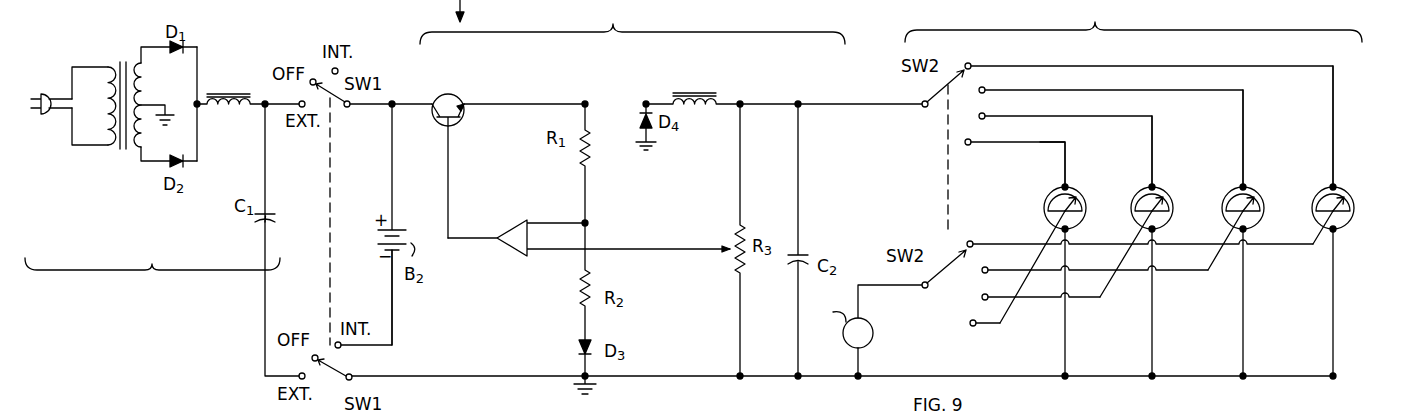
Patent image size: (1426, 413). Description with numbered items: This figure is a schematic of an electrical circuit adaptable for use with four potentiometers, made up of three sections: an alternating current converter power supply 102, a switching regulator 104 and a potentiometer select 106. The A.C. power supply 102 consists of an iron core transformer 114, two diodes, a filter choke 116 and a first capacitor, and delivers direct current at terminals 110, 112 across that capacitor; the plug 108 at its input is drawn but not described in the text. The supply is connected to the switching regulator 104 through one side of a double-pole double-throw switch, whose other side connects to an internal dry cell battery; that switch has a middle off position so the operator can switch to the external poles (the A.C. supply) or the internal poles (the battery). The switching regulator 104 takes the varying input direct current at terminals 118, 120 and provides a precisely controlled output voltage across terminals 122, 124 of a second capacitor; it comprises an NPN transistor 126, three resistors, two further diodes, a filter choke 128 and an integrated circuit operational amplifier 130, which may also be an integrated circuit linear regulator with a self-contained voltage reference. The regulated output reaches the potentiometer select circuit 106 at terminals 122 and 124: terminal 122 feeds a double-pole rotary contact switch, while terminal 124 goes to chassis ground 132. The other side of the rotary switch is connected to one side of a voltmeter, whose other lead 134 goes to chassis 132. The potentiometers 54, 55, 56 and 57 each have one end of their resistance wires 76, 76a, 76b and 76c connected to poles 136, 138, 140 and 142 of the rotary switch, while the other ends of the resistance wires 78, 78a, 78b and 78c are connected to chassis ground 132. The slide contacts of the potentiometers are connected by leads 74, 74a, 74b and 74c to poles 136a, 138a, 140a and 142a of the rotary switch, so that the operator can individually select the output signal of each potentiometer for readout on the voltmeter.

The alternating current converter power supply 102 is at (152, 281).
The switching regulator 104 is at (632, 22).
The potentiometer select 106 is at (1133, 21).
The AC plug 108 is at (44, 94).
The terminal 110 is at (277, 112).
The terminal 112 is at (263, 352).
The iron core transformer 114 is at (121, 62).
The filter choke 116 is at (233, 94).
The terminal 118 is at (412, 103).
The terminal 120 is at (480, 375).
The terminal 122 is at (854, 92).
The terminal 124 is at (828, 380).
The NPN transistor 126 is at (458, 95).
The filter choke 128 is at (690, 93).
The integrated circuit operational amplifier 130 is at (508, 221).
The chassis ground 132 is at (595, 388).
The lead 134 is at (862, 370).
The pole 136 is at (972, 140).
The pole 138 is at (986, 114).
The pole 140 is at (986, 88).
The pole 142 is at (973, 64).
The pole 136a is at (971, 326).
The pole 138a is at (982, 299).
The pole 140a is at (987, 268).
The pole 142a is at (990, 238).
The potentiometer 54 is at (1072, 190).
The potentiometer 55 is at (1160, 190).
The potentiometer 56 is at (1250, 190).
The potentiometer 57 is at (1340, 190).
The lead 74 is at (997, 326).
The lead 74a is at (1096, 303).
The lead 74b is at (1207, 284).
The lead 74c is at (1298, 258).
The resistance wire end 76 is at (1060, 142).
The resistance wire end 76a is at (1155, 126).
The resistance wire end 76b is at (1245, 90).
The resistance wire end 76c is at (1290, 63).
The resistance wire end 78 is at (1068, 354).
The resistance wire end 78a is at (1155, 354).
The resistance wire end 78b is at (1246, 354).
The resistance wire end 78c is at (1336, 354).